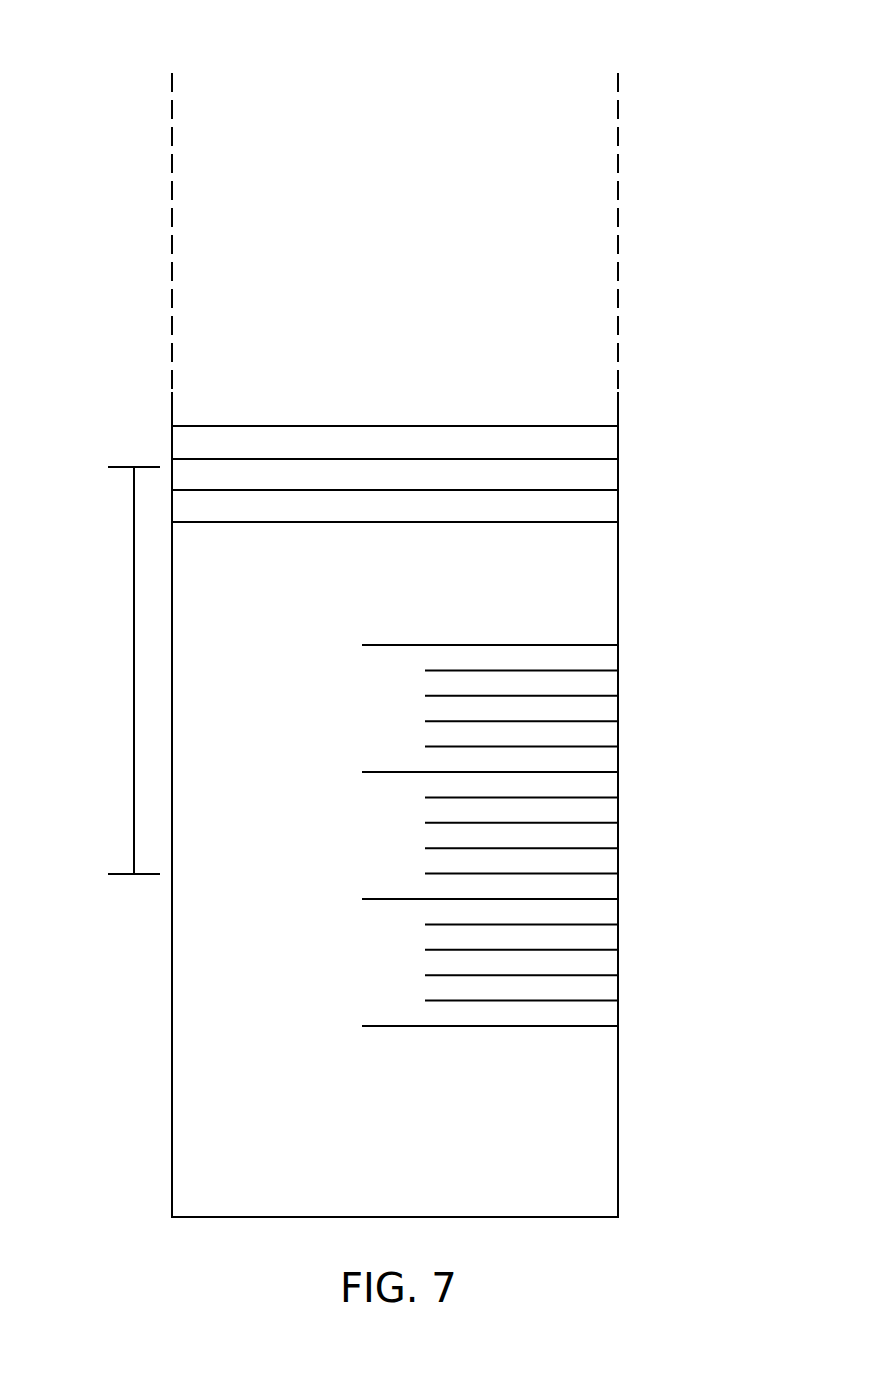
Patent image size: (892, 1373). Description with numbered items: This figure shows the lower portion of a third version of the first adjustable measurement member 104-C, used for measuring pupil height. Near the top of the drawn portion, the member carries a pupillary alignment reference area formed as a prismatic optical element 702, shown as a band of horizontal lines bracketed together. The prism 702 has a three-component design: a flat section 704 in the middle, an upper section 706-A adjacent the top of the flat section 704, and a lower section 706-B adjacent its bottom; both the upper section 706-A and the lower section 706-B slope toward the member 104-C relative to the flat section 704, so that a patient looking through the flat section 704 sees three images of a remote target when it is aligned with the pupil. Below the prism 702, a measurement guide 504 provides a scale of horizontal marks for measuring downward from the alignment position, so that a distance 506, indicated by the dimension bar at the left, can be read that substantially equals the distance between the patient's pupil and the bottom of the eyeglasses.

The first adjustable measurement member 104-C is at (94, 82).
The prismatic optical element 702 is at (468, 471).
The upper section 706-A is at (612, 466).
The lower section 706-B is at (464, 530).
The flat section 704 is at (172, 464).
The distance 506 is at (132, 647).
The measurement guide 504 is at (643, 645).